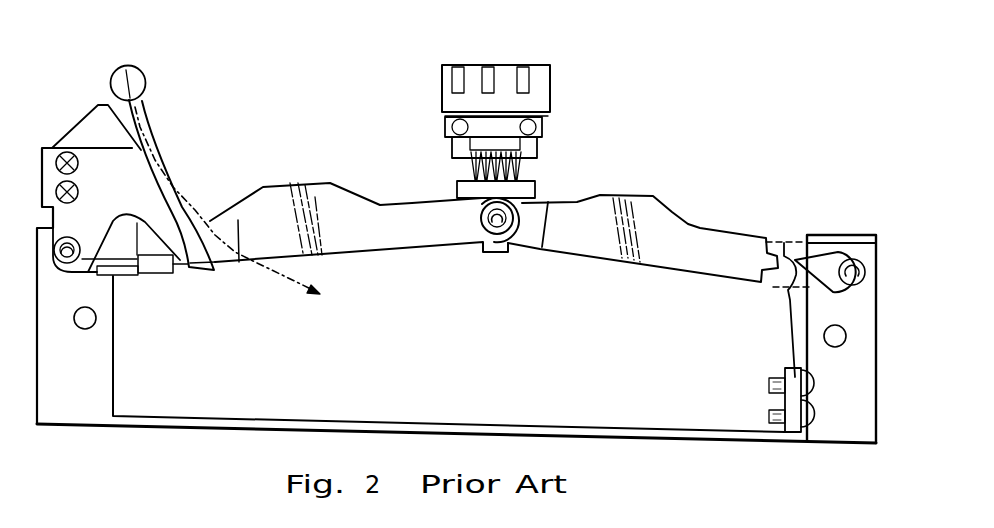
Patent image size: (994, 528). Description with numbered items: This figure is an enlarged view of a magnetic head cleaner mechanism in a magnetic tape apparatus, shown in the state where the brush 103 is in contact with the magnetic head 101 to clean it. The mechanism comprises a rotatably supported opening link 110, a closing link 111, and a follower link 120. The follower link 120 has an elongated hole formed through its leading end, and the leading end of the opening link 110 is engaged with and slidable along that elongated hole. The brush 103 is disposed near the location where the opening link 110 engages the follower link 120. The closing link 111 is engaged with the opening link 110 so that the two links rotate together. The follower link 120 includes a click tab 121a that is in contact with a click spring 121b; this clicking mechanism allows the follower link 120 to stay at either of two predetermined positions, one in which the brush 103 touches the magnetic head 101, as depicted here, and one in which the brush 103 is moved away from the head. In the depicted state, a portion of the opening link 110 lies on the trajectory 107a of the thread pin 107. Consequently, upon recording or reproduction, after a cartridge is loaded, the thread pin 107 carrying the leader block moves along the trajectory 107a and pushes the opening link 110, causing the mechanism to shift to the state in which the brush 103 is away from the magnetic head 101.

The magnetic head 101 is at (552, 97).
The brush 103 is at (522, 162).
The thread pin 107 is at (140, 84).
The trajectory 107a is at (170, 173).
The opening link 110 is at (327, 200).
The closing link 111 is at (97, 103).
The follower link 120 is at (657, 223).
The click tab 121a is at (802, 255).
The click spring 121b is at (795, 243).